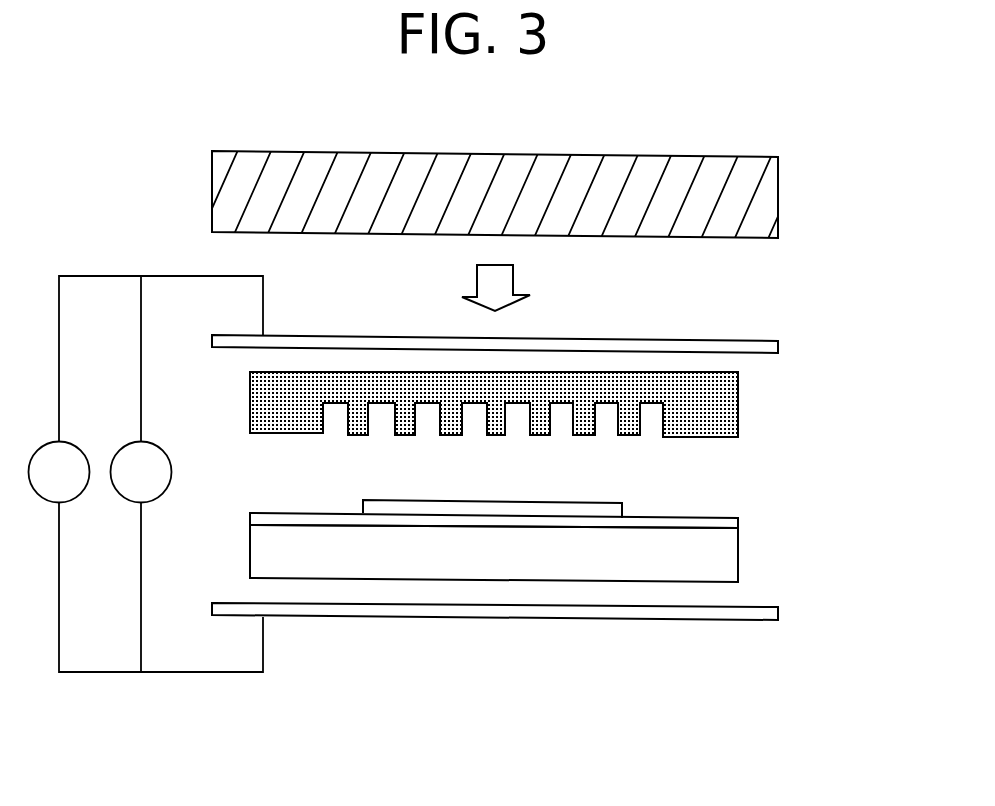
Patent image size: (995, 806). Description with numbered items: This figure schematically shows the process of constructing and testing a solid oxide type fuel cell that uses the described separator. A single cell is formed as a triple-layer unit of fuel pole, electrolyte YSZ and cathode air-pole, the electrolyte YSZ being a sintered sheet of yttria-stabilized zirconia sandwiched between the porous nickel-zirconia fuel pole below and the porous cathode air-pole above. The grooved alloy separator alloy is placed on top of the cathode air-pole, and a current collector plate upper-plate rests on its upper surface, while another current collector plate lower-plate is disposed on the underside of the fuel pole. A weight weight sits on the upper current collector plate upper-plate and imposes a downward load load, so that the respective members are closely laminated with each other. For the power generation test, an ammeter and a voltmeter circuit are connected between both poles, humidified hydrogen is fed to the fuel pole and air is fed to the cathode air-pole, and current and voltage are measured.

The element weight is at (410, 162).
The element load is at (533, 288).
The current collector plate upper-plate is at (340, 343).
The separator alloy is at (738, 407).
The air pole air-pole is at (622, 512).
The electrolyte YSZ is at (738, 521).
The current collector plate lower-plate is at (342, 612).
The ammeter and voltmeter circuit is at (146, 474).